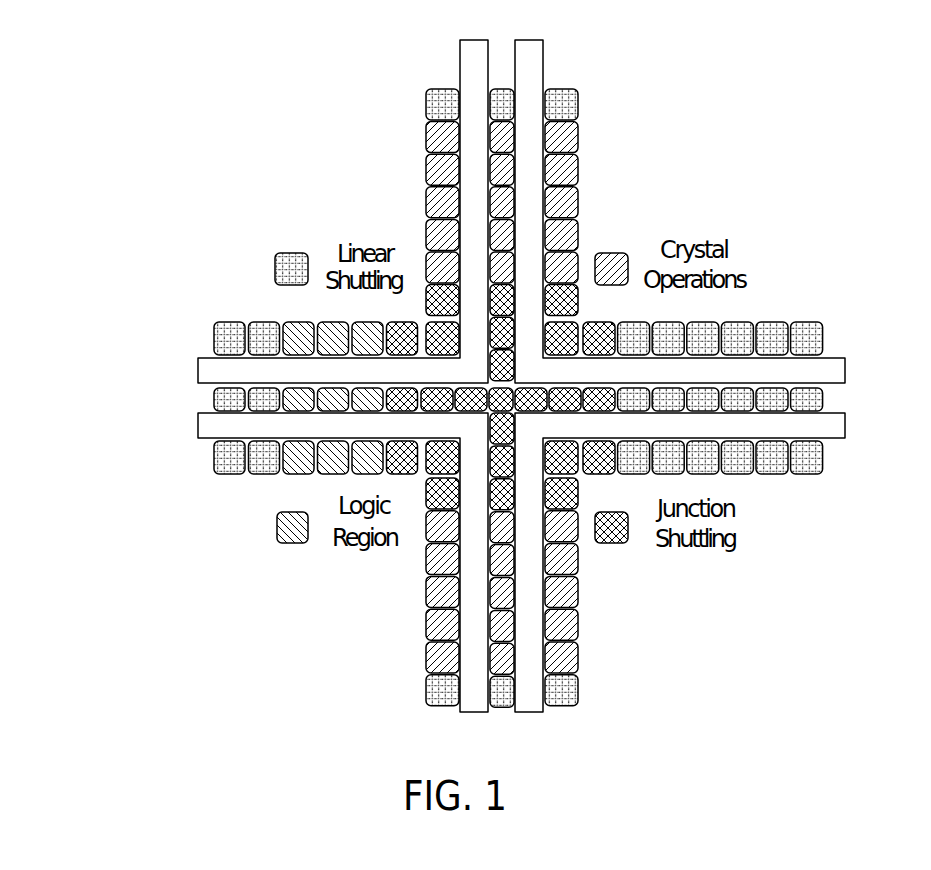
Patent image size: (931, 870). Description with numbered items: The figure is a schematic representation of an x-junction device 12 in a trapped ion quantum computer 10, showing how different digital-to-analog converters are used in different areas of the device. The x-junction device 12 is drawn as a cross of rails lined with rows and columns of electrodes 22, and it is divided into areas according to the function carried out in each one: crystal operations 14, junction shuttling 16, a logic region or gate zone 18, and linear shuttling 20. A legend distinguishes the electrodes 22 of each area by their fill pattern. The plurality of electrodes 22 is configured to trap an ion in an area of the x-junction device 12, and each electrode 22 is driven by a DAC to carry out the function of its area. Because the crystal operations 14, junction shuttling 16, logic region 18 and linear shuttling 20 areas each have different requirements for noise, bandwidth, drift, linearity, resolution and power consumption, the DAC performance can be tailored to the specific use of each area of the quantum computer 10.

The trapped ion quantum computer 10 is at (286, 70).
The x-junction device 12 is at (530, 63).
The crystal operations area 14 is at (425, 597).
The junction shuttling area 16 is at (425, 517).
The logic region/gate zone 18 is at (285, 468).
The linear shuttling area 20 is at (215, 458).
The electrodes 22 is at (65, 483).